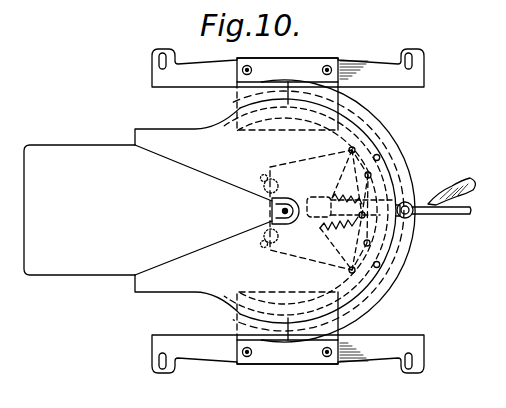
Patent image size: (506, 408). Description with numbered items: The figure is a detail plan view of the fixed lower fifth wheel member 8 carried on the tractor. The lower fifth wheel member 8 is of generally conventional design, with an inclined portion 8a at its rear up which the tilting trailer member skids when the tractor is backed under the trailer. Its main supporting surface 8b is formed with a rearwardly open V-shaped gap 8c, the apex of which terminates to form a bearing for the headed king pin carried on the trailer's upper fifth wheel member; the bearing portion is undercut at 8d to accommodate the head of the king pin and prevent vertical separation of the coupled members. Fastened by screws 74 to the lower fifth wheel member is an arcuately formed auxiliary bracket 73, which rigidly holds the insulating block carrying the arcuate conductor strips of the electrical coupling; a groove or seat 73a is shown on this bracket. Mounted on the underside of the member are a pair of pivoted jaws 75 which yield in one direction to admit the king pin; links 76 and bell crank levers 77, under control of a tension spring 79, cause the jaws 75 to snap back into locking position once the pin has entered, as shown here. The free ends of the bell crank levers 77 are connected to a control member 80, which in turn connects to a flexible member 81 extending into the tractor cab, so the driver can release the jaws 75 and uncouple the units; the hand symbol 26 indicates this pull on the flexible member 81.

The lower fifth wheel member 8 is at (182, 274).
The inclined portion 8a is at (108, 257).
The main supporting surface 8b is at (252, 163).
The V-shaped gap 8c is at (222, 180).
The undercut 8d is at (350, 153).
The auxiliary bracket 73 is at (400, 271).
The ring groove 73a is at (381, 134).
The screws 74 is at (284, 226).
The pivoted jaws 75 is at (272, 211).
The links 76 is at (296, 162).
The bell crank levers 77 is at (342, 202).
The tension spring 79 is at (270, 211).
The control member 80 is at (414, 183).
The flexible member 81 is at (420, 216).
The pointing hand indicator 26 is at (460, 191).